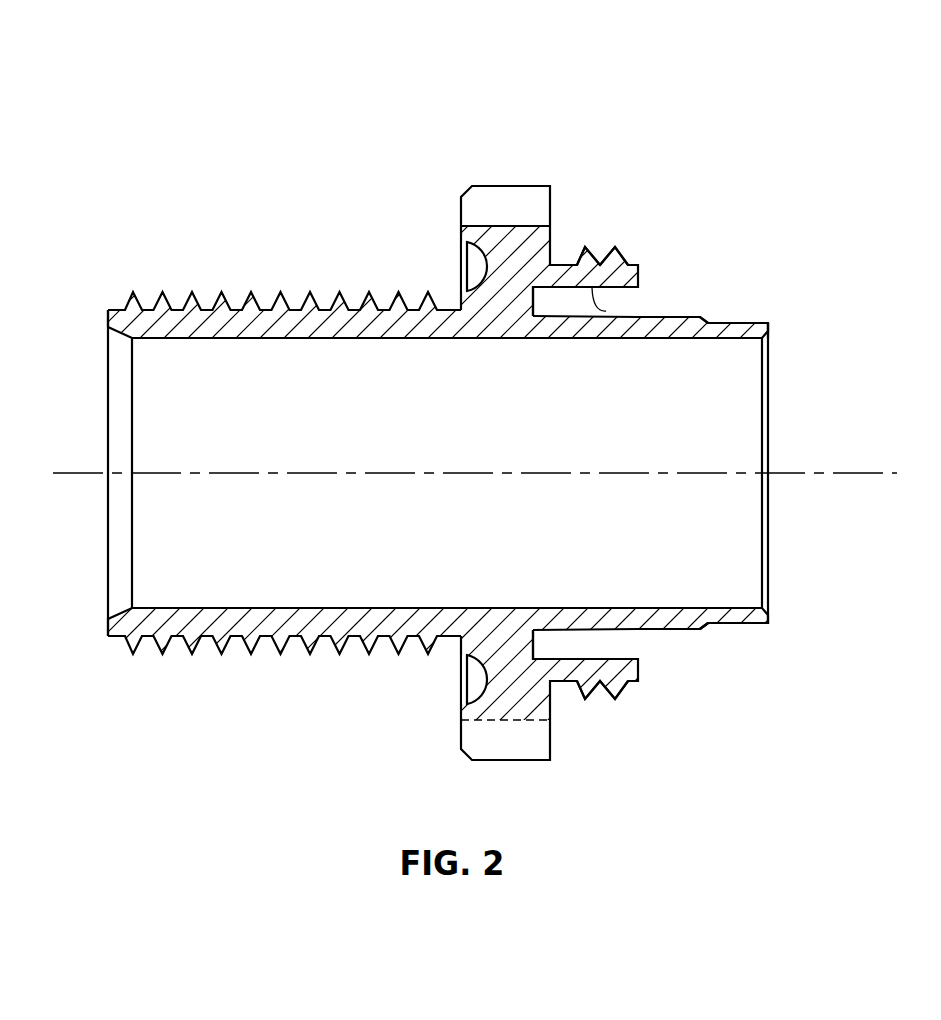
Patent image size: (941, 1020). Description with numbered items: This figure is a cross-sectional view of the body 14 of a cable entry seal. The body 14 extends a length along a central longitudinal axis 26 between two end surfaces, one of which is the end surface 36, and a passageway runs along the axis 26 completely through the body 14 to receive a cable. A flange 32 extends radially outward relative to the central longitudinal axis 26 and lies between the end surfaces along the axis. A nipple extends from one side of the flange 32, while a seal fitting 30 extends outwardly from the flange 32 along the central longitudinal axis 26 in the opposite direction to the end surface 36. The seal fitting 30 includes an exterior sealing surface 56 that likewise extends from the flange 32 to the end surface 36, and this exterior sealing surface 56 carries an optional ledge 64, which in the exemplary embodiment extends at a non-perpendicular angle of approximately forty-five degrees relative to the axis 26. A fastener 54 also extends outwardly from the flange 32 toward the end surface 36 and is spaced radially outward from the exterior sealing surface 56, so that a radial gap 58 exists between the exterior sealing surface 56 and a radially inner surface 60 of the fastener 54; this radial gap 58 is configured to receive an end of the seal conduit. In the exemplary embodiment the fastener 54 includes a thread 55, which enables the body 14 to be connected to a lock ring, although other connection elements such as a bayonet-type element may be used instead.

The body 14 is at (655, 152).
The central longitudinal axis 26 is at (863, 472).
The seal fitting 30 is at (748, 318).
The flange 32 is at (534, 172).
The end surface 36 is at (768, 327).
The fastener 54 is at (633, 254).
The thread 55 is at (590, 264).
The exterior sealing surface 56 is at (700, 310).
The radial gap 58 is at (578, 648).
The radially inner surface 60 is at (606, 311).
The ledge 64 is at (702, 634).